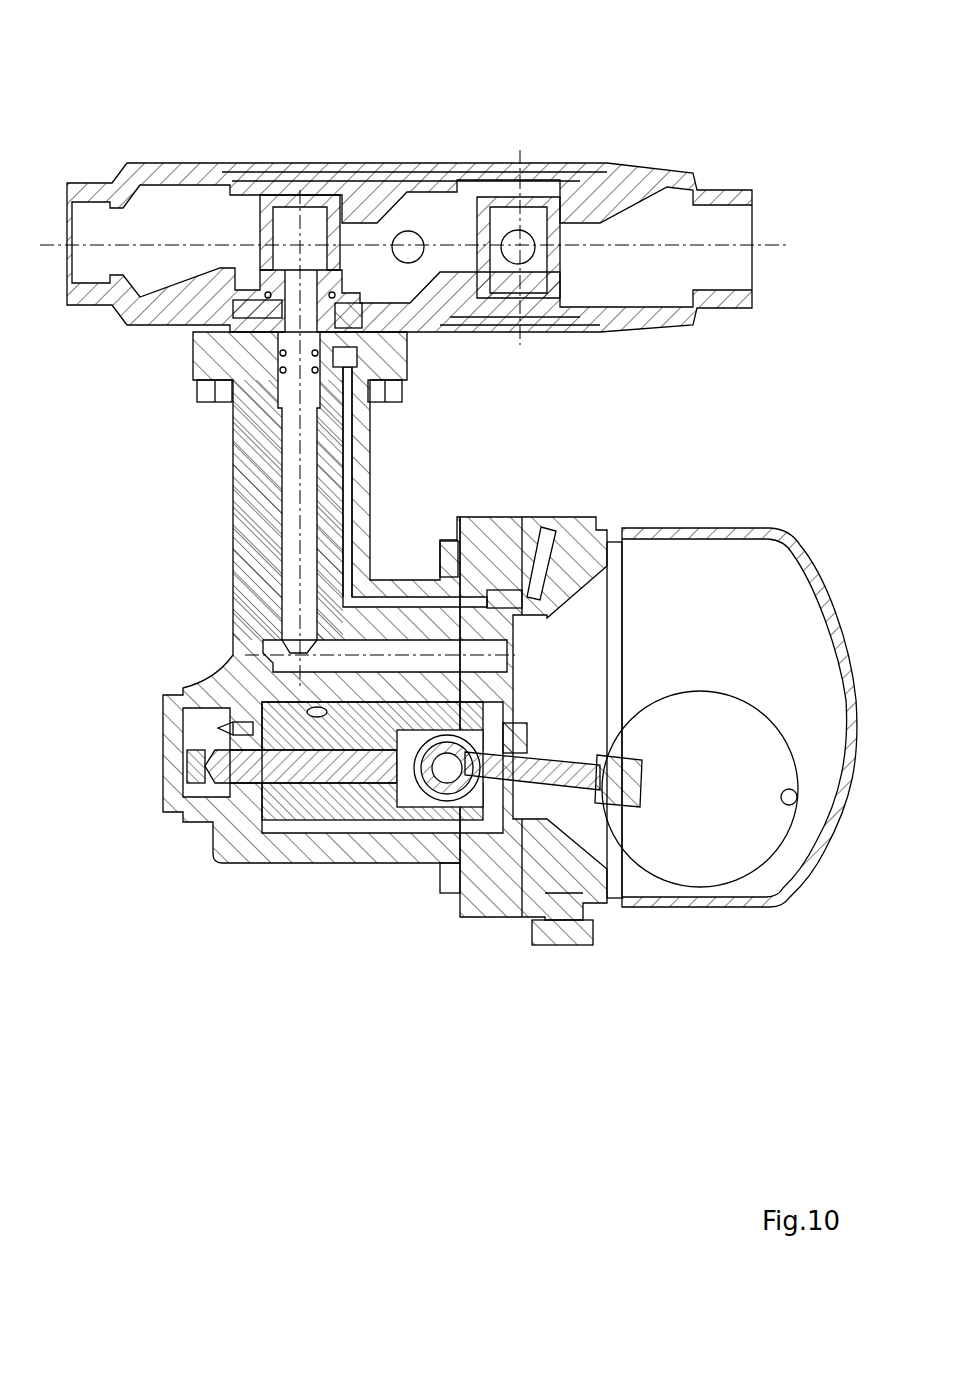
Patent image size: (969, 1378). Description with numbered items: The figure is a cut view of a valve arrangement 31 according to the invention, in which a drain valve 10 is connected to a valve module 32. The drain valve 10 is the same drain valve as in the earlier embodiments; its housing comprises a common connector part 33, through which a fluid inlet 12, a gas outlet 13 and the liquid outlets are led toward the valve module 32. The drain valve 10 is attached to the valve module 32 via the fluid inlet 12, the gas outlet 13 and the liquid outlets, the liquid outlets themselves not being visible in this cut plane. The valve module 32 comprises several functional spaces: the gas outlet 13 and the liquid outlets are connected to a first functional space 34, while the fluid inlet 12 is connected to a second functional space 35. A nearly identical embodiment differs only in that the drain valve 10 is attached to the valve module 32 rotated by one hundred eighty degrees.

The drain valve 10 is at (685, 497).
The fluid inlet 12 is at (292, 502).
The gas outlet 13 is at (348, 470).
The valve arrangement 31 is at (122, 428).
The valve module 32 is at (165, 152).
The common connector part 33 is at (255, 440).
The first functional space 34 is at (373, 285).
The second functional space 35 is at (308, 228).